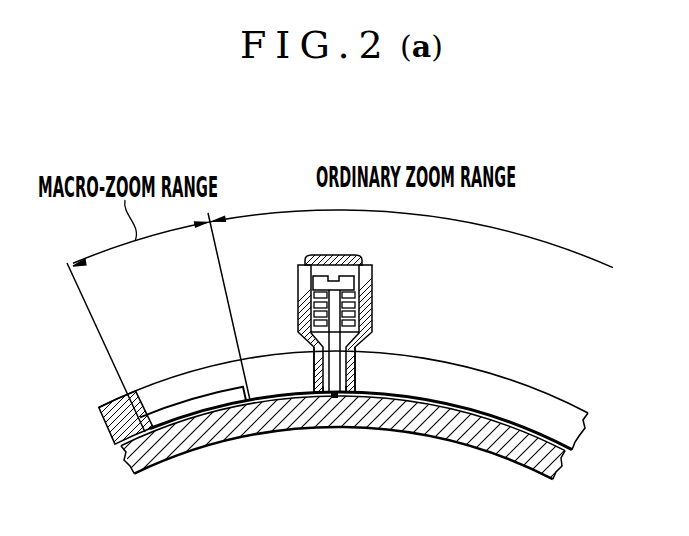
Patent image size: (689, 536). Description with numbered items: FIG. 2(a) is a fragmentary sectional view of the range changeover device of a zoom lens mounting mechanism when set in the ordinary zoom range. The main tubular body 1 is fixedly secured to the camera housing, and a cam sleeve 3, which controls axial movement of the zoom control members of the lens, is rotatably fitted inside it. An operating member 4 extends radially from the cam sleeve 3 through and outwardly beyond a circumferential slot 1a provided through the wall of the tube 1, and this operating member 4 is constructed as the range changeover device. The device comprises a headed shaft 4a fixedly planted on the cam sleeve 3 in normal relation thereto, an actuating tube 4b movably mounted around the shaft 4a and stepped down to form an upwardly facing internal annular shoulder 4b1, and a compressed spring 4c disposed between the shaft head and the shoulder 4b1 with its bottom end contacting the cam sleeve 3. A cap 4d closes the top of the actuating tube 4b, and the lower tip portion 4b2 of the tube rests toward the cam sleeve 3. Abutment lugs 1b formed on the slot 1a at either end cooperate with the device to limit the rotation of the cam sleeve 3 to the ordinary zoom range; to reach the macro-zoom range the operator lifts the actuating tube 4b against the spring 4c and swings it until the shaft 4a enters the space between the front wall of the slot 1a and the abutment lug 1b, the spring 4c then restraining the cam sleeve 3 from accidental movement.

The main tubular body 1 is at (117, 423).
The circumferential slot 1a is at (448, 385).
The abutment lug 1b is at (200, 400).
The cam sleeve 3 is at (267, 415).
The operating member 4 is at (350, 348).
The headed shaft 4a is at (335, 292).
The actuating tube 4b is at (372, 313).
The internal annular shoulder 4b1 is at (357, 337).
The tip portion of housing 4b2 is at (355, 395).
The compressed spring 4c is at (348, 300).
The cap of housing 4d is at (323, 255).